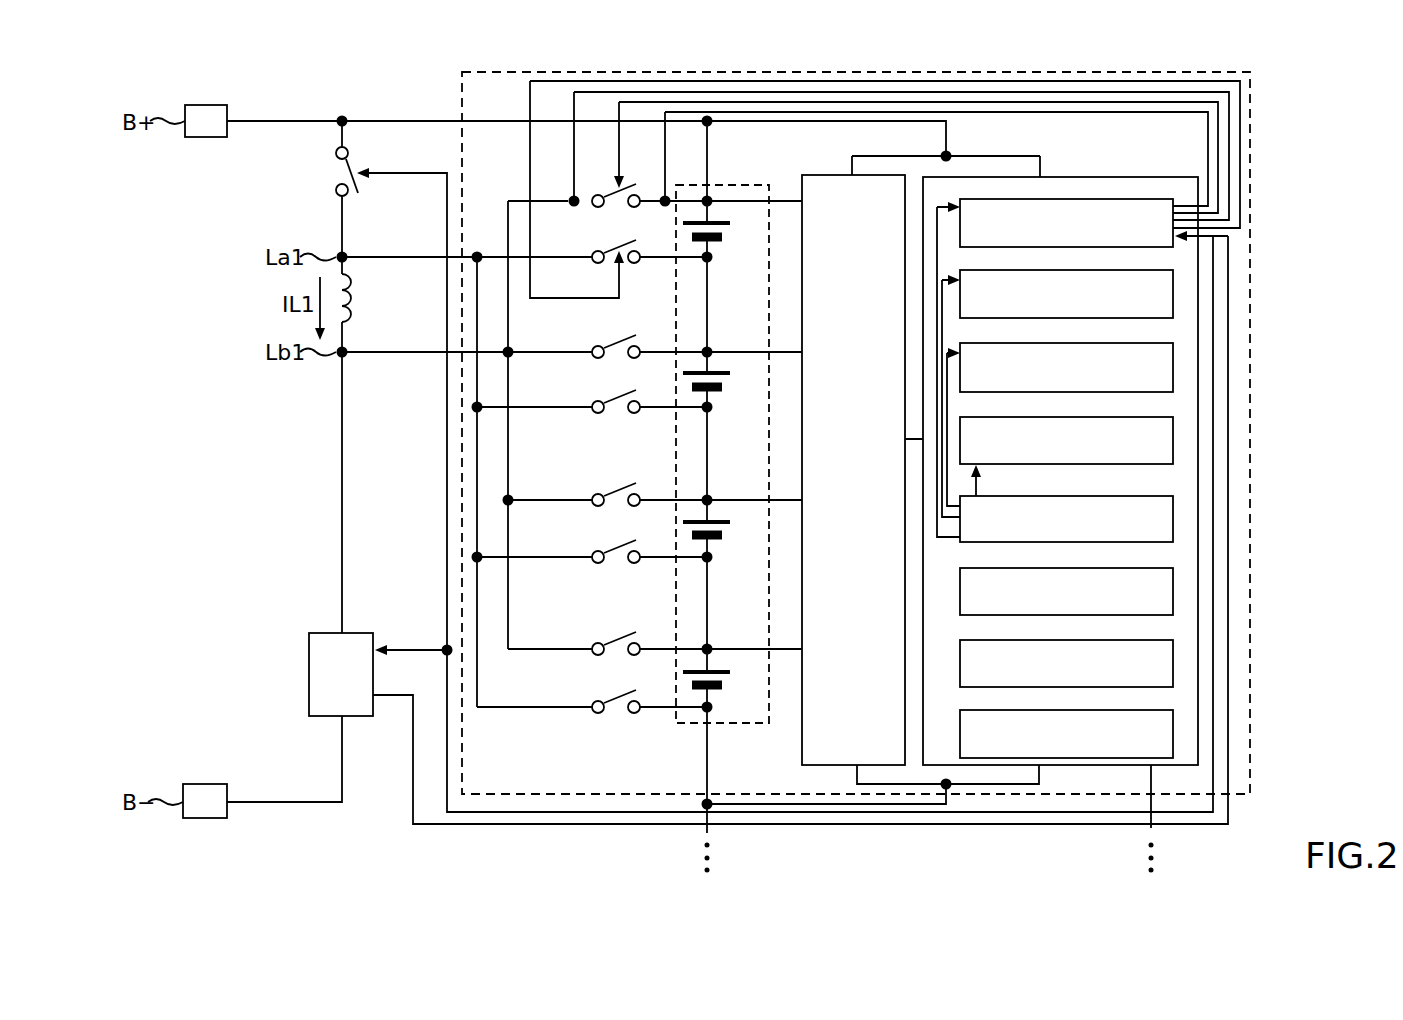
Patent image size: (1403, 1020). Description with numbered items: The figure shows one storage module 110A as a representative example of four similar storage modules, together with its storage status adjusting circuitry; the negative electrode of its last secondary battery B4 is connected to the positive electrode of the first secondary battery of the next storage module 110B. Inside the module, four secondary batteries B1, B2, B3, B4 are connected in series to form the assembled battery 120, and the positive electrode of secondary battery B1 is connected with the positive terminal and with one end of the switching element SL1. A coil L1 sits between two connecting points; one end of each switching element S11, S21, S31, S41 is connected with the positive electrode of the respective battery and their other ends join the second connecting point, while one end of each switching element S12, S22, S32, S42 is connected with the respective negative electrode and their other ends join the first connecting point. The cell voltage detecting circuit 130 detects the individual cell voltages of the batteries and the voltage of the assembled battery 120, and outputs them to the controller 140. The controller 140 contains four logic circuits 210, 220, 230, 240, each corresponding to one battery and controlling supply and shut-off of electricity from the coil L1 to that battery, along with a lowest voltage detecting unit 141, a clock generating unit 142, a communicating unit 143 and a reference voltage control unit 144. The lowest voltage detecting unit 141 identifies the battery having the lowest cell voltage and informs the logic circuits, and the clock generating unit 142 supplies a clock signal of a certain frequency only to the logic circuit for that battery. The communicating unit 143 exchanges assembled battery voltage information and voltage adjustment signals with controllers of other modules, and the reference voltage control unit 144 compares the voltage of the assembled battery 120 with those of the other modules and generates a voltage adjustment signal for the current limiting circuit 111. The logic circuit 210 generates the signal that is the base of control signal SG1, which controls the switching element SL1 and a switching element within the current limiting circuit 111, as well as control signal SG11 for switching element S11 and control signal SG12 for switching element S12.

The storage module 110A is at (1252, 107).
The storage module 110B is at (1172, 864).
The current limiting circuit 111 is at (362, 633).
The assembled battery 120 is at (757, 167).
The cell voltage detecting circuit 130 is at (822, 175).
The controller 140 is at (1158, 177).
The lowest voltage detecting unit 141 is at (1132, 568).
The clock generating unit 142 is at (1132, 496).
The communicating unit 143 is at (1132, 640).
The reference voltage control unit 144 is at (1132, 710).
The logic circuit 210 is at (1132, 199).
The logic circuit 220 is at (1132, 270).
The logic circuit 230 is at (1132, 343).
The logic circuit 240 is at (1132, 417).
The switching element SL1 is at (352, 163).
The control signal SG1 is at (400, 178).
The control signal SG11 is at (619, 128).
The control signal SG12 is at (543, 298).
The coil L1 is at (354, 303).
The switching element S11 is at (608, 193).
The switching element S12 is at (608, 249).
The switching element S21 is at (608, 344).
The switching element S22 is at (608, 399).
The switching element S31 is at (608, 492).
The switching element S32 is at (608, 549).
The switching element S41 is at (608, 641).
The switching element S42 is at (608, 699).
The secondary battery B1 is at (724, 235).
The secondary battery B2 is at (724, 385).
The secondary battery B3 is at (724, 533).
The secondary battery B4 is at (724, 683).